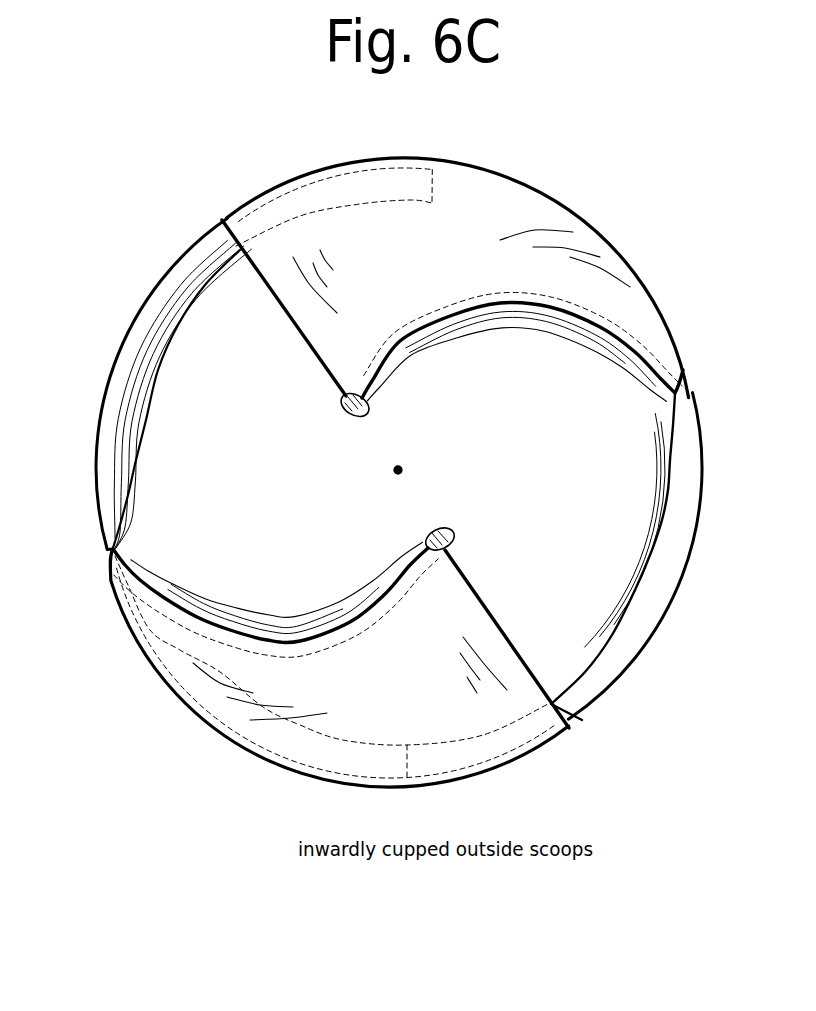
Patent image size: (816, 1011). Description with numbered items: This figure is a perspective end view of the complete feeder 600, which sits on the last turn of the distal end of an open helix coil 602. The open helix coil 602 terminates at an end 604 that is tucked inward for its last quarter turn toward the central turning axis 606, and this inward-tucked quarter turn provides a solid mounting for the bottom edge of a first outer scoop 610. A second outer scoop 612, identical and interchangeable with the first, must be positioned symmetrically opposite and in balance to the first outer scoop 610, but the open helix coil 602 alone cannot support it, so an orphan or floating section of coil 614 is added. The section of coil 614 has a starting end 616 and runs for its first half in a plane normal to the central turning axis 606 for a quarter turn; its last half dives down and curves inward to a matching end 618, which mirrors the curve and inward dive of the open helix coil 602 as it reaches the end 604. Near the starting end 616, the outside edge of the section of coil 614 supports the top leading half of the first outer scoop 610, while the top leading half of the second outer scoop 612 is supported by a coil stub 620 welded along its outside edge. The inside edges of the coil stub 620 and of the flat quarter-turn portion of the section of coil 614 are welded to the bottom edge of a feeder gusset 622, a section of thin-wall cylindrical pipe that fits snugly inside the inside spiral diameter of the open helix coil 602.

The complete feeder 600 is at (227, 123).
The open helix coil 602 is at (578, 703).
The end 604 is at (346, 410).
The central turning axis 606 is at (394, 472).
The first outer scoop 610 is at (503, 229).
The second outer scoop 612 is at (433, 654).
The section of coil 614 is at (175, 277).
The starting end 616 is at (435, 191).
The matching end 618 is at (452, 532).
The coil stub 620 is at (483, 733).
The feeder gusset 622 is at (160, 366).